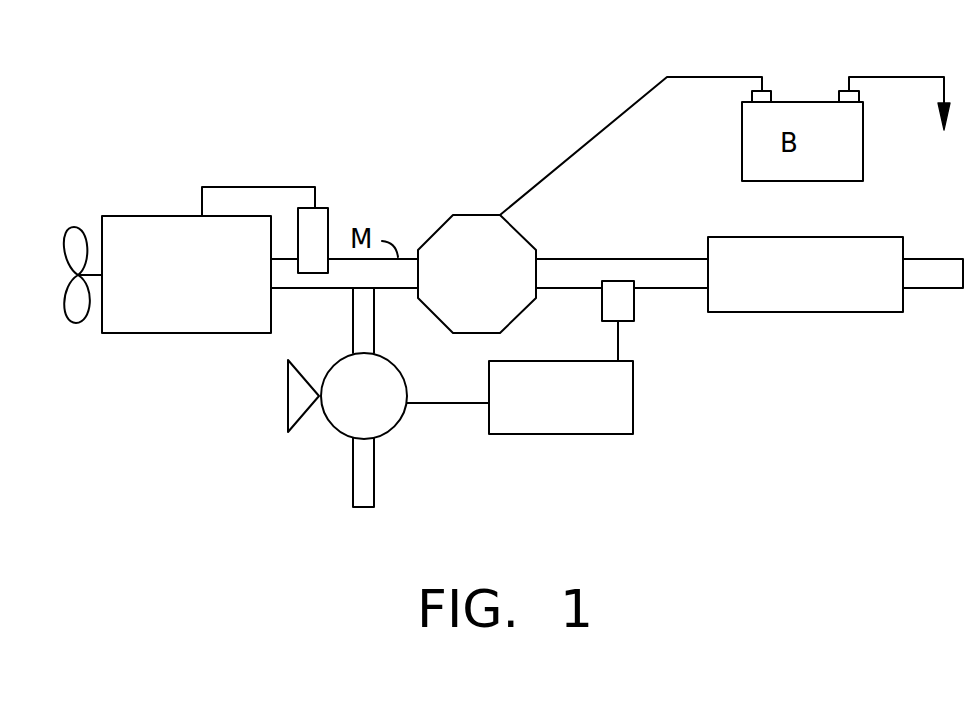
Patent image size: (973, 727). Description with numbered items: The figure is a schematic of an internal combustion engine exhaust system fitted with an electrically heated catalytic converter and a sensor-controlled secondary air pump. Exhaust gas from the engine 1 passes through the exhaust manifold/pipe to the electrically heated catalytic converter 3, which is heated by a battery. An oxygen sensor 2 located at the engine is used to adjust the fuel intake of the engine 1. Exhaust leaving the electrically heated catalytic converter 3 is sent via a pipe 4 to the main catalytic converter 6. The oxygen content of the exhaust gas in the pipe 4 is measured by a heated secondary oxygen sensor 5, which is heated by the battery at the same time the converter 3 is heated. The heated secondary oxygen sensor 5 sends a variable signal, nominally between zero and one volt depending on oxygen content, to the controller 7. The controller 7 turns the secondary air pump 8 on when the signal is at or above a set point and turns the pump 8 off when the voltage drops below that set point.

The engine 1 is at (230, 333).
The oxygen sensor 2 is at (330, 206).
The electrically heated catalytic converter 3 is at (477, 274).
The pipe 4 is at (647, 259).
The heated secondary oxygen sensor 5 is at (634, 317).
The main catalytic converter 6 is at (767, 237).
The controller 7 is at (554, 434).
The secondary air pump 8 is at (384, 431).